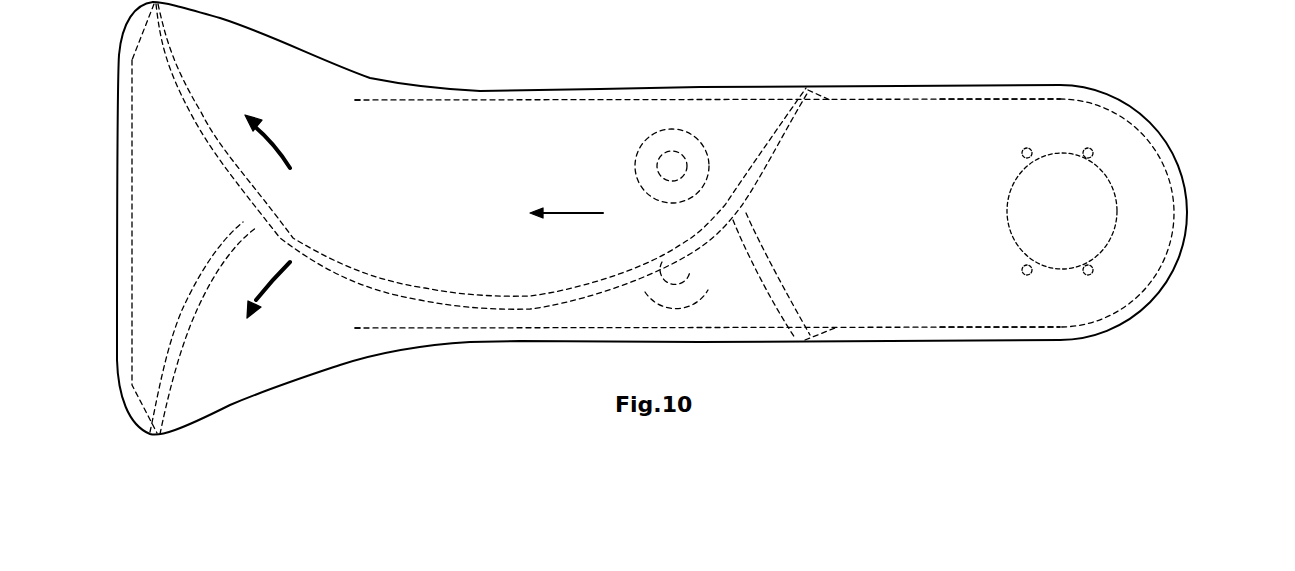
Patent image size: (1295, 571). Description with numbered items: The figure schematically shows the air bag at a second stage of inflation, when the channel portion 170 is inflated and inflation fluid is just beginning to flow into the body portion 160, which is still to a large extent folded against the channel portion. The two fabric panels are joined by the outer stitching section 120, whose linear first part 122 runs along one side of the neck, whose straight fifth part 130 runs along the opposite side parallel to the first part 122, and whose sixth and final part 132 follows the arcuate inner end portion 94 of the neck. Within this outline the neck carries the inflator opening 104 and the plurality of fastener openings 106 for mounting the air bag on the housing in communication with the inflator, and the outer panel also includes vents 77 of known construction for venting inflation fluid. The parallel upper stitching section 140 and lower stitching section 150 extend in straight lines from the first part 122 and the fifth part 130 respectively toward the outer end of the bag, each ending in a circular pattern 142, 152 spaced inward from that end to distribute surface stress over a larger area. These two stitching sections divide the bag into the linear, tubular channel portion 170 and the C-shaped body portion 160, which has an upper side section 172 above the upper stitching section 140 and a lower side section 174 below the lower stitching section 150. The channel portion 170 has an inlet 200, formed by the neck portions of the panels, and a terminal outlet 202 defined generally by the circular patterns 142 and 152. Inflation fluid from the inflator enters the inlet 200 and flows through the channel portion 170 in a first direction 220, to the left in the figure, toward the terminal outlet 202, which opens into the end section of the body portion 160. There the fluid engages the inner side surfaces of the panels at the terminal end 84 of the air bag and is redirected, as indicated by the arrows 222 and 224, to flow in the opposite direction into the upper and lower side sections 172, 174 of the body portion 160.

The terminal end 84 is at (117, 130).
The upper side section 172 is at (326, 52).
The lower side section 174 is at (192, 290).
The body portion 160 is at (234, 425).
The arrow 222 is at (280, 157).
The arrow 224 is at (282, 288).
The terminal outlet 202 is at (356, 231).
The first direction 220 is at (570, 212).
The upper stitching section 140 is at (520, 102).
The circular pattern 142 is at (355, 102).
The lower stitching section 150 is at (510, 328).
The circular pattern 152 is at (355, 328).
The vent 77 is at (682, 130).
The channel portion 170 is at (868, 117).
The first part 122 is at (947, 98).
The outer stitching section 120 is at (1060, 72).
The arcuate inner end portion 94 is at (1178, 160).
The sixth part 132 is at (1173, 227).
The fifth part 130 is at (950, 327).
The inlet 200 is at (1143, 152).
The inflator opening 104 is at (1007, 202).
The fastener openings 106 is at (1024, 150).